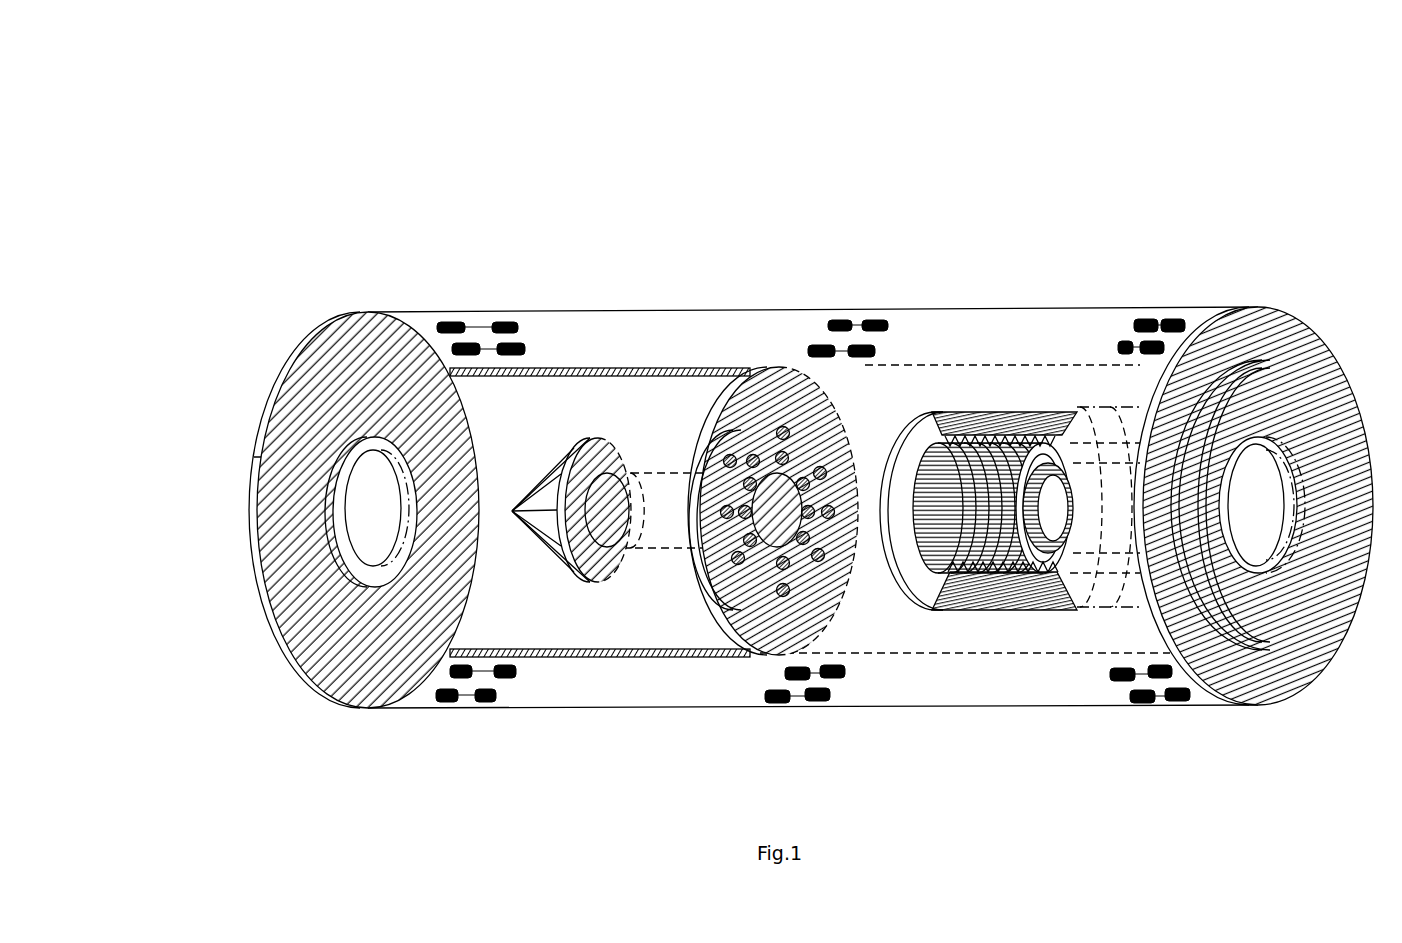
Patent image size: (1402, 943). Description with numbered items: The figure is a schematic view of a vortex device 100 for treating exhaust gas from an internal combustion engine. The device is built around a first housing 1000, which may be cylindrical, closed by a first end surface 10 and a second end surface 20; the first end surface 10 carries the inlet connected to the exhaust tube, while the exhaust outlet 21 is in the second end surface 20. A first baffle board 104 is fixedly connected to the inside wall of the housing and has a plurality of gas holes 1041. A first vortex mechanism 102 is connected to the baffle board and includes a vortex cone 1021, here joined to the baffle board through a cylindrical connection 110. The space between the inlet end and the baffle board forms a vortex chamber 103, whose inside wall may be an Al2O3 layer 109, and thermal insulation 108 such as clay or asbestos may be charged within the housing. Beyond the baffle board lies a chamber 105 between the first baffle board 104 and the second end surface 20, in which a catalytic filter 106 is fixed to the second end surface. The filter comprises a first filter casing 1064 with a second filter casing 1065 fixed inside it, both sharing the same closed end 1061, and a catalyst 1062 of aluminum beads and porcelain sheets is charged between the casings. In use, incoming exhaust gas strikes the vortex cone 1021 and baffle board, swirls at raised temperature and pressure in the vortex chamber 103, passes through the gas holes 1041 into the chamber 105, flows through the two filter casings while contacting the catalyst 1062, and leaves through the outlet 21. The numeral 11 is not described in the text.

The vortex device 100 is at (362, 748).
The first housing 1000 is at (452, 708).
The first end surface 10 is at (283, 643).
The end cap bore 11 is at (352, 468).
The thermal insulation 108 is at (485, 340).
The Al2O3 layer 109 is at (612, 652).
The cylindrical connection 110 is at (661, 550).
The first vortex mechanism 102 is at (593, 438).
The vortex cone 1021 is at (538, 473).
The vortex chamber 103 is at (670, 390).
The first baffle board 104 is at (765, 367).
The gas holes 1041 is at (788, 592).
The chamber 105 is at (877, 398).
The catalytic filter 106 is at (1026, 398).
The closed end 1061 is at (910, 427).
The catalyst 1062 is at (1067, 433).
The first filter casing 1064 is at (967, 410).
The second filter casing 1065 is at (1007, 567).
The second end surface 20 is at (1316, 389).
The outlet 21 is at (1287, 573).